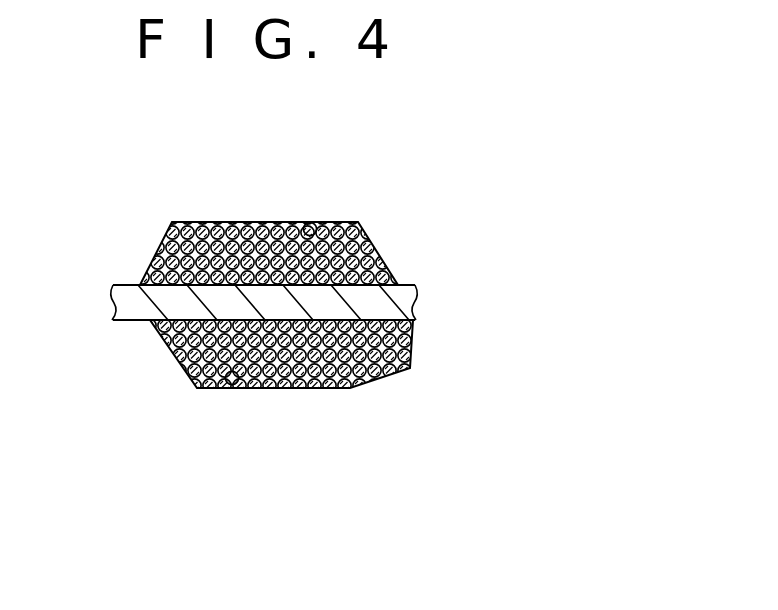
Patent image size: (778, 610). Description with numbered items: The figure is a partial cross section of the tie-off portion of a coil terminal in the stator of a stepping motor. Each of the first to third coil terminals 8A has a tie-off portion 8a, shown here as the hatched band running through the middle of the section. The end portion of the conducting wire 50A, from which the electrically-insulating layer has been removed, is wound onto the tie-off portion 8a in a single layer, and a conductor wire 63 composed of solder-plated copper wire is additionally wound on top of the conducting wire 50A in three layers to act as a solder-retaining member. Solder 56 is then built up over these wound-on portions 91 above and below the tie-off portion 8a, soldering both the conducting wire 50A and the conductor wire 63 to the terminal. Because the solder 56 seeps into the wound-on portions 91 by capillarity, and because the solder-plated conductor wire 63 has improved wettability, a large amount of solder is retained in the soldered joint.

The first coil terminal 8A is at (122, 283).
The tie-off portion 8a is at (383, 299).
The solder 56 is at (366, 228).
The wound-on portion 91 is at (314, 222).
The conducting wire 50A is at (177, 357).
The conductor wire 63 is at (231, 388).